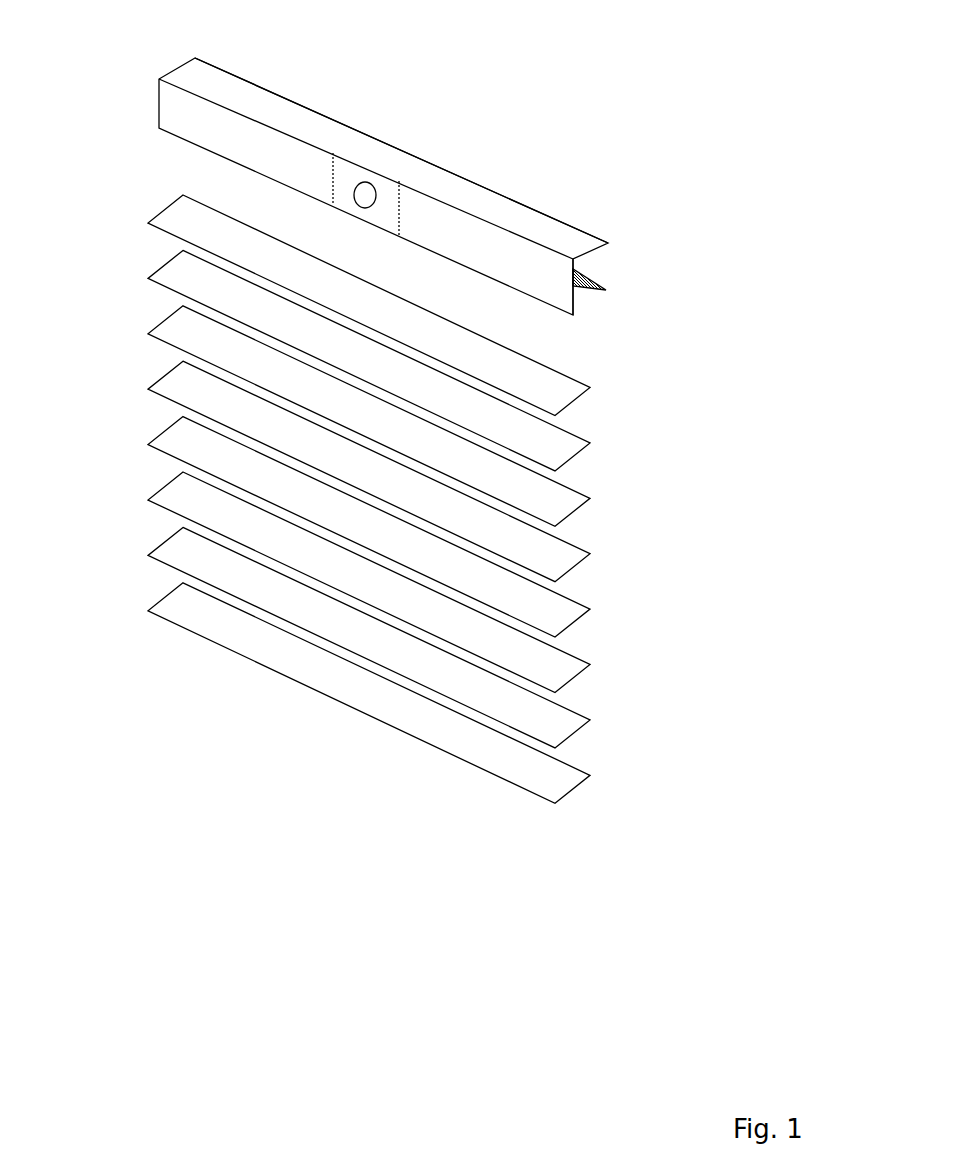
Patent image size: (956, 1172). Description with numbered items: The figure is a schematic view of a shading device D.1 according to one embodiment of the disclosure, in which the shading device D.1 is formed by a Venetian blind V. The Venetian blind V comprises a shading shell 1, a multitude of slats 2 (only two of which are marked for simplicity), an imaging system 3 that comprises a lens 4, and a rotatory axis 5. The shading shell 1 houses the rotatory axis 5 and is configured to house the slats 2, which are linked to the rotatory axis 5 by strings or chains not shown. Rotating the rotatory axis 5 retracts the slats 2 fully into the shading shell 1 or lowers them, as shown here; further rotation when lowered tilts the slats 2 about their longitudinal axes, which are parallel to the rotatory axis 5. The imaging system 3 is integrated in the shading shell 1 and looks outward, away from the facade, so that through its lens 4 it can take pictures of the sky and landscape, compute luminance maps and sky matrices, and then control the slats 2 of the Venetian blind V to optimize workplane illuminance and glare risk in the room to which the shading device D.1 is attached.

The shading shell 1 is at (532, 223).
The slats 2 is at (195, 335).
The imaging system 3 is at (387, 193).
The lens 4 is at (364, 183).
The rotatory axis 5 is at (590, 274).
The shading device D.1 is at (217, 763).
The Venetian blind V is at (440, 777).